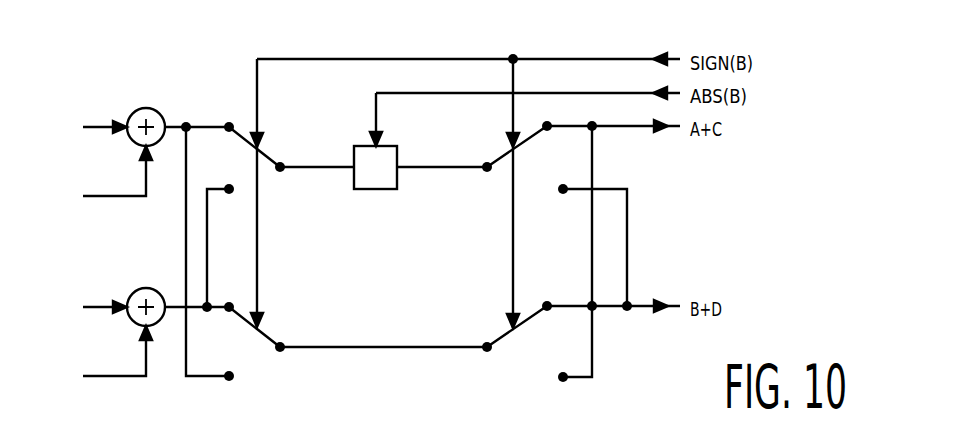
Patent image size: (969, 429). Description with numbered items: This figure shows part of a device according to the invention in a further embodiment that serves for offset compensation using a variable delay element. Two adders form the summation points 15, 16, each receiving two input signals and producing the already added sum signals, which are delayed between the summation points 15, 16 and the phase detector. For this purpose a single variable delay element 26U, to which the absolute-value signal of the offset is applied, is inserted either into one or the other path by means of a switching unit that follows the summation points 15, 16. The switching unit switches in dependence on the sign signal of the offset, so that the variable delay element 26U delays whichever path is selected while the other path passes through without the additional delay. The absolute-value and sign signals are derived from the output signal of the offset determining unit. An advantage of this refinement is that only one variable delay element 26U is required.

The summation point 15 is at (146, 107).
The summation point 16 is at (146, 288).
The variable delay element 26U is at (391, 179).